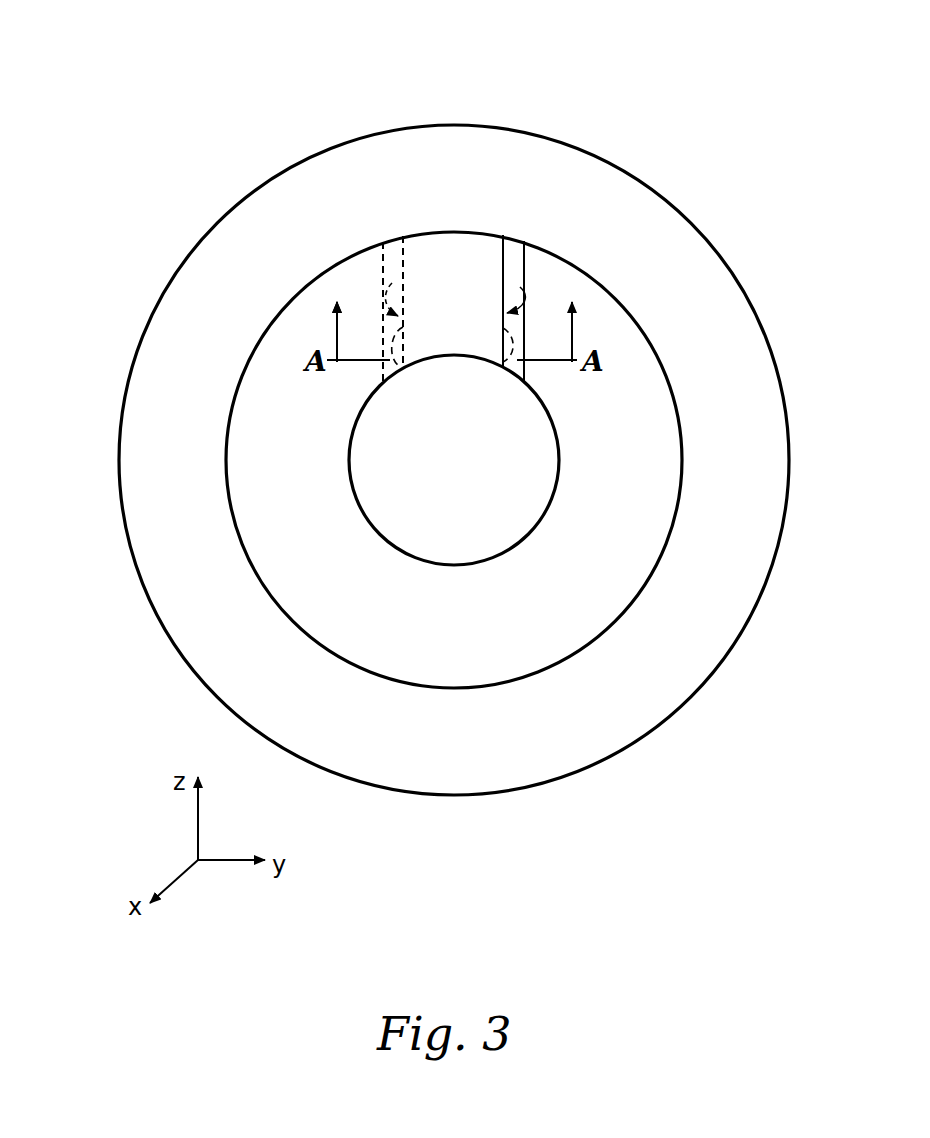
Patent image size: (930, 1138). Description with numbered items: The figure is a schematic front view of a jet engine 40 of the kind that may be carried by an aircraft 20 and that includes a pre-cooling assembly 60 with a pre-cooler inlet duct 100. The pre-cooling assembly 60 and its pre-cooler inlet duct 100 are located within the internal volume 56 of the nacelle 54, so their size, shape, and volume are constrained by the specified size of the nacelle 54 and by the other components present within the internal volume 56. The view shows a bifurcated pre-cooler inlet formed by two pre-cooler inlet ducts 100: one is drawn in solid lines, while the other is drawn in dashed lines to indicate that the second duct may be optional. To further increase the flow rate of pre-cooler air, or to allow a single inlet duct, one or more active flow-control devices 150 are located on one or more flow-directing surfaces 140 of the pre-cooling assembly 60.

The aircraft 20 is at (112, 93).
The jet engine 40 is at (102, 158).
The nacelle 54 is at (120, 400).
The internal volume 56 is at (243, 500).
The pre-cooling assembly 60 is at (440, 180).
The pre-cooler inlet duct 100 is at (392, 257).
The flow-directing surfaces 140 is at (387, 275).
The active flow-control devices 150 is at (380, 340).